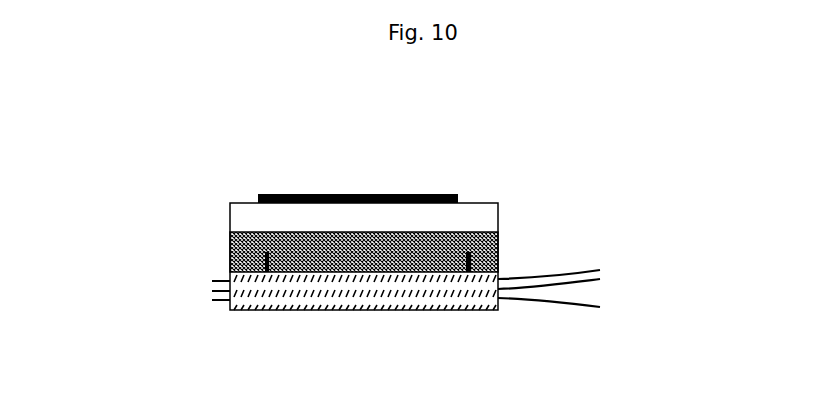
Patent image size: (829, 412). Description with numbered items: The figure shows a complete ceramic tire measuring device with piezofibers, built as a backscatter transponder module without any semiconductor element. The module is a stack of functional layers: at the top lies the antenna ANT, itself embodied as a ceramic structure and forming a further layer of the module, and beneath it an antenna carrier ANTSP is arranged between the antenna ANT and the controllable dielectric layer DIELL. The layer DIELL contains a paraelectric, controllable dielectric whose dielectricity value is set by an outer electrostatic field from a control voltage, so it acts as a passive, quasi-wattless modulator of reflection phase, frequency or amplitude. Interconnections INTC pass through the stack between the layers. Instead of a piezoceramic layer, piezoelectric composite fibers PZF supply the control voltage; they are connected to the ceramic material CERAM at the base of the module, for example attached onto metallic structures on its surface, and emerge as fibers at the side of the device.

The antenna ANT is at (345, 195).
The antenna carrier ANTSP is at (238, 223).
The controllable dielectric layer DIELL is at (230, 255).
The interconnect INTC is at (472, 255).
The ceramic material CERAM is at (268, 308).
The piezofibers PZF is at (592, 288).